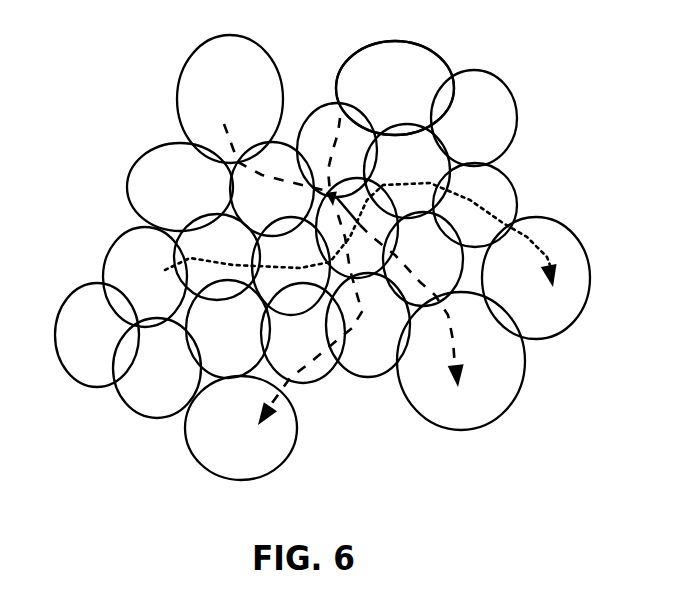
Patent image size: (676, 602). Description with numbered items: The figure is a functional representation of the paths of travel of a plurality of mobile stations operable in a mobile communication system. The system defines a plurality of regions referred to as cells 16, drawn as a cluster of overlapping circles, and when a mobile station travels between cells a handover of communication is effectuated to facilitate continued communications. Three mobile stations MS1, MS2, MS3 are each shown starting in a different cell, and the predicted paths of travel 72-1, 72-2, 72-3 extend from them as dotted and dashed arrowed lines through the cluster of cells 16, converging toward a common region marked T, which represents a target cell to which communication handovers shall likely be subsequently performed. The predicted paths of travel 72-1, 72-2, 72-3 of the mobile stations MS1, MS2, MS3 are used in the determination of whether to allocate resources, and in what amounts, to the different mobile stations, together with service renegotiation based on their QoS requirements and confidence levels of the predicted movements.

The cell 16 is at (474, 118).
The target cell T is at (357, 228).
The mobile station MS1 is at (143, 266).
The mobile station MS2 is at (175, 78).
The mobile station MS3 is at (408, 69).
The predicted path of travel 72-1 is at (167, 262).
The predicted path of travel 72-2 is at (212, 104).
The predicted path of travel 72-3 is at (365, 100).